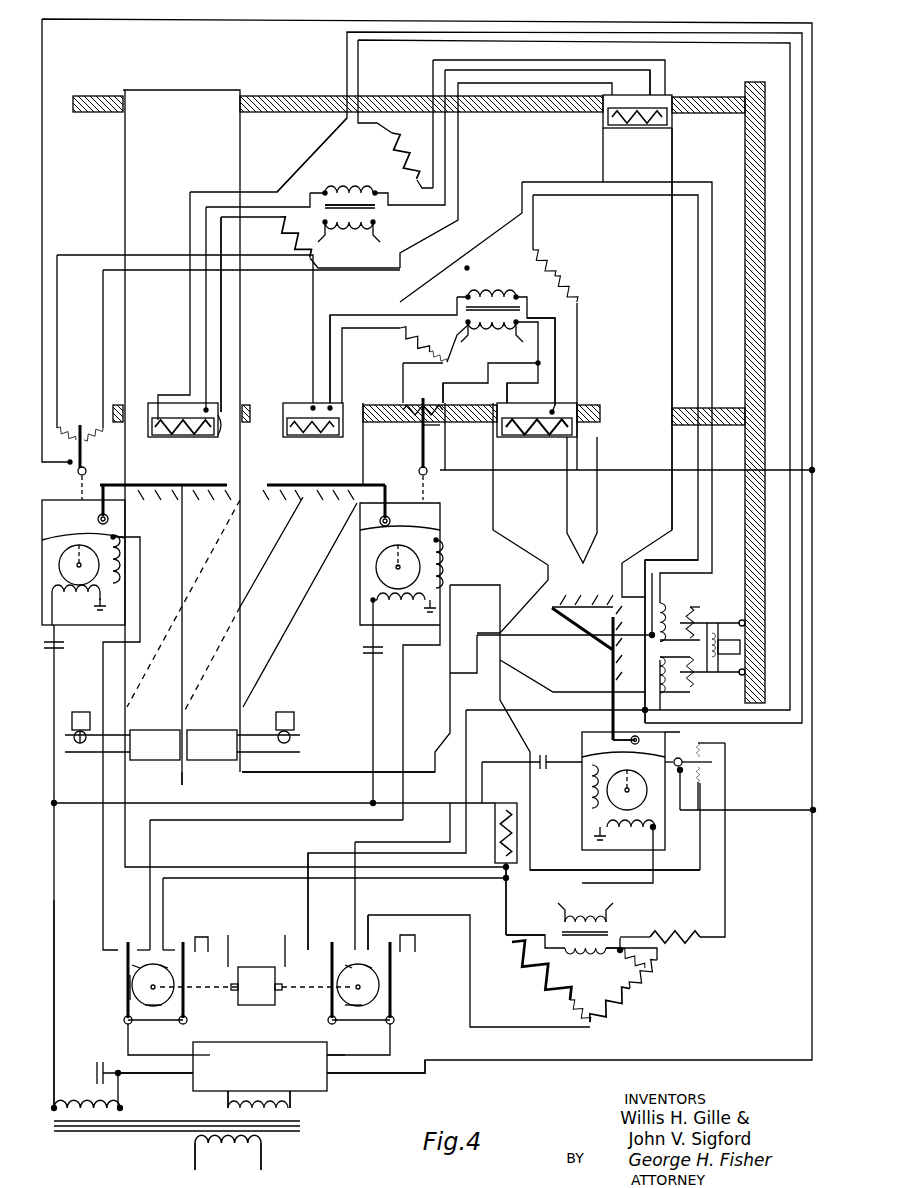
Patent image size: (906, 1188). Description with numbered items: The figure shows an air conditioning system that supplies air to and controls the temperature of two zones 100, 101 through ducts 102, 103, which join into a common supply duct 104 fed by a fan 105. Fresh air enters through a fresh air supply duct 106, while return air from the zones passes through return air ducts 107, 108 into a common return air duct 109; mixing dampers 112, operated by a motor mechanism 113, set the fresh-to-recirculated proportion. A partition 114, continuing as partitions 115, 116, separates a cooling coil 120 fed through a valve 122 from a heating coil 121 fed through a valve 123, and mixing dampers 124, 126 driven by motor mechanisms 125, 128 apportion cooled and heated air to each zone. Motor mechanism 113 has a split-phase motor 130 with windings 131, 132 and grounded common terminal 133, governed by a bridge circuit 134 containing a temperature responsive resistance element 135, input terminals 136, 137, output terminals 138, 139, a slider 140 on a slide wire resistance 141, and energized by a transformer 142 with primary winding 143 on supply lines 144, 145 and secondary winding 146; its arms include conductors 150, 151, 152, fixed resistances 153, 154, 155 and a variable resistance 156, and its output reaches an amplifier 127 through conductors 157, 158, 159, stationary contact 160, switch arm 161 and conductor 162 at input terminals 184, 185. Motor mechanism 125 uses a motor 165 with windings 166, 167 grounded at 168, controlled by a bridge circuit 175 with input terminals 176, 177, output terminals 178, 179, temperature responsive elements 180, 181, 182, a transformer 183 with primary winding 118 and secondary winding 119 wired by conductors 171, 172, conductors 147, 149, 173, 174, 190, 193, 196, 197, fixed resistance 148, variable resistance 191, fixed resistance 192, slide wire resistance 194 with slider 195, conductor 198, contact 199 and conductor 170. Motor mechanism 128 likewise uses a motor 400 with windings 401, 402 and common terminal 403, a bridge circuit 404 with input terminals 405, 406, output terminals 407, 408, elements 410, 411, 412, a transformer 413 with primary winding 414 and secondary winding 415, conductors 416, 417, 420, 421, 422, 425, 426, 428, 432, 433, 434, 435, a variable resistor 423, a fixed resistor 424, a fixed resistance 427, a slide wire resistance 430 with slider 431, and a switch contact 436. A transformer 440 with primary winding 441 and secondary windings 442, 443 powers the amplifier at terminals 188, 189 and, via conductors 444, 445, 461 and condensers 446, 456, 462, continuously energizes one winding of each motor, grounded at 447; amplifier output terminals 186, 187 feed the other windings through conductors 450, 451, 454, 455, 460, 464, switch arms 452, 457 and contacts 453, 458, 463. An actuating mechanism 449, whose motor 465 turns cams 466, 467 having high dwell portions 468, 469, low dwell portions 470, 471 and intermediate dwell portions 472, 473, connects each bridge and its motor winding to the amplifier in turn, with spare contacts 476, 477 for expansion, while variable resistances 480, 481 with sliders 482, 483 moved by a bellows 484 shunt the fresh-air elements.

The zone 100 is at (698, 89).
The zone 101 is at (694, 149).
The duct 102 is at (123, 142).
The duct 103 is at (363, 460).
The common supply duct 104 is at (316, 776).
The fan 105 is at (472, 592).
The fresh air supply duct 106 is at (734, 604).
The return air duct 107 is at (602, 508).
The return air duct 108 is at (493, 497).
The common return air duct 109 is at (548, 586).
The mixing dampers 112 is at (610, 668).
The motor mechanism 113 is at (666, 742).
The partition 114 is at (182, 780).
The partition 115 is at (182, 518).
The partition 116 is at (280, 526).
The primary winding 118 is at (349, 234).
The secondary winding 119 is at (360, 192).
The cooling coil 120 is at (160, 730).
The heating coil 121 is at (216, 730).
The valve 122 is at (94, 740).
The valve 123 is at (271, 740).
The mixing damper 124 is at (162, 485).
The motor mechanism 125 is at (66, 506).
The mixing damper 126 is at (321, 485).
The amplifier 127 is at (234, 1042).
The motor mechanism 128 is at (440, 512).
The motor 130 is at (630, 770).
The winding 131 is at (590, 790).
The winding 132 is at (648, 832).
The common terminal 133 is at (592, 828).
The bridge circuit 134 is at (513, 920).
The temperature responsive resistance element 135 is at (495, 843).
The input terminal 136 is at (513, 939).
The input terminal 137 is at (660, 950).
The output terminal 138 is at (700, 758).
The output terminal 139 is at (592, 1020).
The slider 140 is at (705, 768).
The slide wire resistance 141 is at (698, 744).
The transformer 142 is at (616, 930).
The primary winding 143 is at (585, 902).
The supply line 144 is at (162, 1160).
The supply line 145 is at (261, 1160).
The secondary winding 146 is at (592, 958).
The conductor 147 is at (222, 318).
The fixed resistance 148 is at (290, 232).
The conductor 149 is at (86, 255).
The conductor 150 is at (506, 895).
The conductor 151 is at (548, 874).
The conductor 152 is at (725, 858).
The fixed resistance 153 is at (678, 930).
The fixed resistance 154 is at (540, 975).
The fixed resistance 155 is at (612, 1000).
The variable resistance 156 is at (655, 968).
The conductor 157 is at (800, 814).
The conductor 158 is at (172, 24).
The conductor 159 is at (508, 1030).
The stationary contact 160 is at (378, 948).
The movable switch arm 161 is at (392, 975).
The conductor 162 is at (392, 1035).
The motor 165 is at (70, 550).
The winding 166 is at (88, 600).
The winding 167 is at (120, 560).
The ground connection 168 is at (108, 602).
The conductor 170 is at (362, 1022).
The conductor 171 is at (308, 170).
The conductor 172 is at (440, 205).
The conductor 173 is at (190, 318).
The conductor 174 is at (347, 52).
The bridge circuit 175 is at (335, 168).
The input terminal 176 is at (212, 434).
The input terminal 177 is at (660, 100).
The output terminal 178 is at (80, 425).
The output terminal 179 is at (660, 720).
The temperature responsive resistance element 180 is at (172, 432).
The temperature responsive element 181 is at (645, 128).
The temperature responsive element 182 is at (655, 675).
The transformer 183 is at (378, 212).
The input terminal 184 is at (330, 1076).
The input terminal 185 is at (342, 1052).
The output terminal 186 is at (196, 1076).
The output terminal 187 is at (198, 1052).
The power supply terminal 188 is at (292, 1098).
The power supply terminal 189 is at (224, 1098).
The conductor 190 is at (358, 52).
The variable resistance 191 is at (380, 135).
The fixed resistance 192 is at (418, 170).
The conductor 193 is at (433, 74).
The slide wire resistance 194 is at (102, 441).
The slider 195 is at (61, 441).
The conductor 196 is at (103, 330).
The conductor 197 is at (458, 148).
The conductor 198 is at (568, 712).
The stationary switch contact 199 is at (312, 948).
The motor 400 is at (376, 574).
The winding 401 is at (398, 608).
The winding 402 is at (445, 566).
The common terminal 403 is at (432, 620).
The bridge circuit 404 is at (476, 272).
The input terminal 405 is at (330, 406).
The input terminal 406 is at (553, 410).
The output terminal 407 is at (428, 447).
The output terminal 408 is at (628, 650).
The temperature responsive resistance element 410 is at (306, 437).
The temperature responsive resistance element 411 is at (540, 437).
The temperature responsive resistance element 412 is at (680, 608).
The transformer 413 is at (448, 339).
The primary winding 414 is at (491, 361).
The secondary winding 415 is at (494, 294).
The conductor 416 is at (370, 312).
The conductor 417 is at (556, 348).
The conductor 420 is at (340, 346).
The conductor 421 is at (548, 182).
The conductor 422 is at (690, 310).
The variable resistor 423 is at (538, 262).
The fixed resistor 424 is at (555, 290).
The conductor 425 is at (578, 372).
The conductor 426 is at (348, 332).
The fixed resistance 427 is at (412, 339).
The conductor 428 is at (403, 386).
The slide wire resistance 430 is at (412, 444).
The slider 431 is at (428, 458).
The conductor 432 is at (444, 398).
The conductor 433 is at (508, 398).
The conductor 434 is at (618, 470).
The conductor 435 is at (566, 636).
The switch contact 436 is at (348, 950).
The transformer 440 is at (300, 1126).
The primary winding 441 is at (210, 1146).
The secondary winding 442 is at (90, 1104).
The secondary winding 443 is at (248, 1102).
The conductor 444 is at (54, 930).
The conductor 445 is at (212, 806).
The condenser 446 is at (548, 756).
The ground connection 447 is at (104, 1062).
The actuating mechanism 449 is at (288, 1010).
The conductor 450 is at (142, 1058).
The conductor 451 is at (147, 1021).
The switch arm 452 is at (185, 968).
The stationary contact 453 is at (175, 947).
The conductor 454 is at (230, 878).
The conductor 455 is at (132, 1076).
The condenser 456 is at (56, 650).
The switch arm 457 is at (124, 965).
The contact 458 is at (115, 947).
The conductor 460 is at (102, 843).
The conductor 461 is at (373, 696).
The condenser 462 is at (362, 650).
The contact 463 is at (136, 948).
The conductor 464 is at (204, 822).
The motor 465 is at (238, 1000).
The cam 466 is at (141, 1000).
The cam 467 is at (346, 1000).
The high dwell portion 468 is at (135, 962).
The high dwell portion 469 is at (357, 957).
The low dwell portion 470 is at (163, 952).
The low dwell portion 471 is at (379, 967).
The intermediate dwell portion 472 is at (164, 1012).
The intermediate dwell portion 473 is at (355, 1014).
The contact 476 is at (195, 948).
The contact 477 is at (405, 944).
The variable resistance 480 is at (696, 610).
The variable resistance 481 is at (701, 674).
The slider 482 is at (723, 630).
The slider 483 is at (719, 680).
The temperature responsive device 484 is at (723, 647).